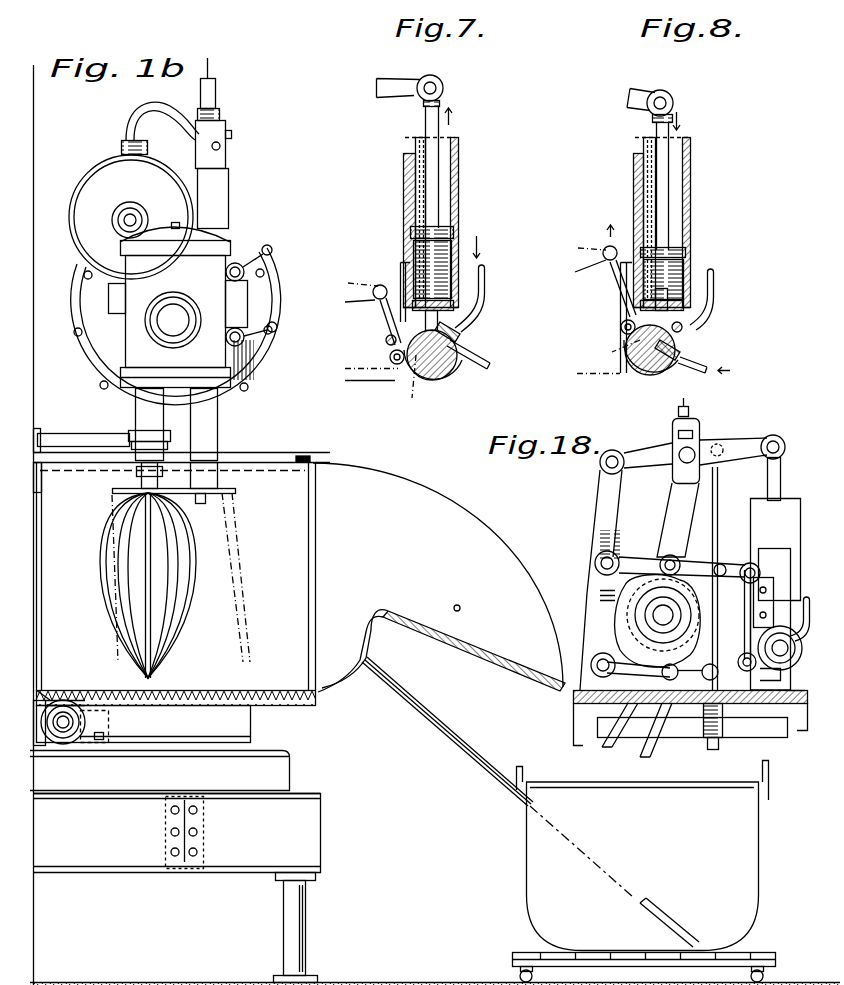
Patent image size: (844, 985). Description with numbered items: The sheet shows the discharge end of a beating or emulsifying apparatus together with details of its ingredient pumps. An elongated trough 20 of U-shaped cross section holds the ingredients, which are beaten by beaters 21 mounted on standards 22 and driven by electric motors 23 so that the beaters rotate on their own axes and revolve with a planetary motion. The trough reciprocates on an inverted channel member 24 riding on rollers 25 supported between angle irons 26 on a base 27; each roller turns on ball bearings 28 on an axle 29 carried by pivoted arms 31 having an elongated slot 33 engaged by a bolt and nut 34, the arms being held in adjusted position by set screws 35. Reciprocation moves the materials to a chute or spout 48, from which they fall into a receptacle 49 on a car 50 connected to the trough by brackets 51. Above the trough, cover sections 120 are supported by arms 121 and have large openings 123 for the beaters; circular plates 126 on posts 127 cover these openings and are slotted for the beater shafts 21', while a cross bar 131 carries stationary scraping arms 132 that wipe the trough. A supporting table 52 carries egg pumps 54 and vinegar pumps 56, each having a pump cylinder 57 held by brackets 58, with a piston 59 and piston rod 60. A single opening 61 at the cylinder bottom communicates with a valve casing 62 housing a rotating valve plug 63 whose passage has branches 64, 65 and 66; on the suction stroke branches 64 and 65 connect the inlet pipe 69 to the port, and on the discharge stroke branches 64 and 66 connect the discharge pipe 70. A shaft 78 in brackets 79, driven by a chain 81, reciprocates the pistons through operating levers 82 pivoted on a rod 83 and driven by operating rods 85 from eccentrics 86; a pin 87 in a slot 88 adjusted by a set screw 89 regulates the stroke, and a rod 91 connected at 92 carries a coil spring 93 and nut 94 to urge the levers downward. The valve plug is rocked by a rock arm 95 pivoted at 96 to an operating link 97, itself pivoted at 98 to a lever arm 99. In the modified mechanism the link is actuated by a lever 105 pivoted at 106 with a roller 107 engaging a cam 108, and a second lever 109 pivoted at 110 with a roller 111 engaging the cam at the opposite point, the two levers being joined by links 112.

In FIG. 1B, the trough 20 is at (190, 694).
In FIG. 1B, the beaters 21 is at (161, 585).
In FIG. 1B, the beater shafts 21' is at (128, 476).
In FIG. 1B, the standards 22 is at (220, 440).
In FIG. 1B, the electric motors 23 is at (72, 216).
In FIG. 1B, the inverted channel member 24 is at (180, 706).
In FIG. 1B, the rollers 25 is at (70, 705).
In FIG. 1B, the angle irons 26 is at (100, 725).
In FIG. 1B, the base 27 is at (284, 774).
In FIG. 1B, the ball bearings 28 is at (70, 728).
In FIG. 1B, the axles 29 is at (99, 745).
In FIG. 1B, the arms 31 is at (38, 747).
In FIG. 1B, the elongated slot 33 is at (48, 698).
In FIG. 1B, the bolt and nut 34 is at (62, 700).
In FIG. 1B, the set screws 35 is at (66, 732).
In FIG. 1B, the chute or spout 48 is at (453, 645).
In FIG. 1B, the receptacle 49 is at (750, 872).
In FIG. 1B, the car 50 is at (527, 942).
In FIG. 1B, the brackets 51 is at (440, 730).
In FIG. 18, the supporting table 52 is at (575, 700).
In FIG. 7, the egg pumps 54 is at (461, 166).
In FIG. 8, the egg pumps 54 is at (695, 157).
In FIG. 18, the vinegar pumps 56 is at (746, 512).
In FIG. 7, the pump cylinder 57 is at (455, 186).
In FIG. 8, the pump cylinder 57 is at (686, 172).
In FIG. 18, the pump cylinder 57 is at (758, 544).
In FIG. 7, the brackets 58 is at (400, 266).
In FIG. 8, the brackets 58 is at (620, 340).
In FIG. 18, the brackets 58 is at (756, 628).
In FIG. 7, the piston 59 is at (453, 230).
In FIG. 8, the piston 59 is at (684, 250).
In FIG. 7, the piston rod 60 is at (438, 208).
In FIG. 8, the piston rod 60 is at (668, 200).
In FIG. 18, the piston rod 60 is at (776, 490).
In FIG. 7, the opening 61 is at (432, 300).
In FIG. 8, the opening 61 is at (640, 305).
In FIG. 7, the valve casing 62 is at (437, 370).
In FIG. 8, the valve casing 62 is at (660, 374).
In FIG. 18, the valve casing 62 is at (770, 676).
In FIG. 7, the valve plug 63 is at (458, 345).
In FIG. 8, the valve plug 63 is at (644, 372).
In FIG. 18, the valve plug 63 is at (780, 648).
In FIG. 7, the valve passage branch 64 is at (462, 328).
In FIG. 8, the valve passage branch 64 is at (672, 362).
In FIG. 7, the valve passage branch 65 is at (386, 340).
In FIG. 8, the valve passage branch 65 is at (683, 330).
In FIG. 7, the valve passage branch 66 is at (400, 382).
In FIG. 8, the valve passage branch 66 is at (640, 352).
In FIG. 18, the valve passage branch 66 is at (603, 594).
In FIG. 7, the inlet pipe 69 is at (485, 280).
In FIG. 8, the inlet pipe 69 is at (713, 295).
In FIG. 18, the inlet pipe 69 is at (802, 610).
In FIG. 7, the discharge pipe 70 is at (478, 370).
In FIG. 8, the discharge pipe 70 is at (704, 359).
In FIG. 18, the discharge pipe 70 is at (788, 704).
In FIG. 18, the shaft 78 is at (664, 622).
In FIG. 18, the brackets 79 is at (600, 510).
In FIG. 18, the chain 81 is at (645, 740).
In FIG. 7, the operating levers 82 is at (386, 98).
In FIG. 8, the operating levers 82 is at (627, 104).
In FIG. 18, the rod 83 is at (600, 466).
In FIG. 18, the operating rods 85 is at (672, 505).
In FIG. 18, the eccentrics 86 is at (627, 635).
In FIG. 18, the pin 87 is at (683, 450).
In FIG. 18, the slot 88 is at (692, 432).
In FIG. 18, the set screw 89 is at (690, 408).
In FIG. 18, the rod 91 is at (720, 482).
In FIG. 18, the connection 92 is at (719, 447).
In FIG. 18, the coil springs 93 is at (722, 722).
In FIG. 18, the nuts 94 is at (718, 744).
In FIG. 7, the rock arm 95 is at (418, 383).
In FIG. 8, the rock arm 95 is at (612, 350).
In FIG. 7, the pivot 96 is at (394, 365).
In FIG. 8, the pivot 96 is at (620, 324).
In FIG. 7, the operating link 97 is at (386, 318).
In FIG. 8, the operating link 97 is at (612, 284).
In FIG. 18, the operating link 97 is at (744, 606).
In FIG. 7, the pivot 98 is at (372, 302).
In FIG. 8, the pivot 98 is at (606, 245).
In FIG. 7, the lever arm 99 is at (352, 283).
In FIG. 8, the lever arm 99 is at (591, 248).
In FIG. 18, the levers 105 is at (748, 566).
In FIG. 18, the pivot 106 is at (595, 563).
In FIG. 18, the roller 107 is at (665, 558).
In FIG. 18, the cam 108 is at (624, 612).
In FIG. 18, the second lever 109 is at (622, 725).
In FIG. 18, the pivot 110 is at (629, 660).
In FIG. 18, the roller 111 is at (672, 682).
In FIG. 18, the links 112 is at (721, 577).
In FIG. 1B, the cover sections 120 is at (300, 457).
In FIG. 1B, the arms 121 is at (60, 436).
In FIG. 1B, the openings 123 is at (232, 461).
In FIG. 1B, the circular plates 126 is at (236, 491).
In FIG. 1B, the posts 127 is at (222, 474).
In FIG. 1B, the cross bar 131 is at (40, 470).
In FIG. 1B, the scraping arms 132 is at (45, 540).